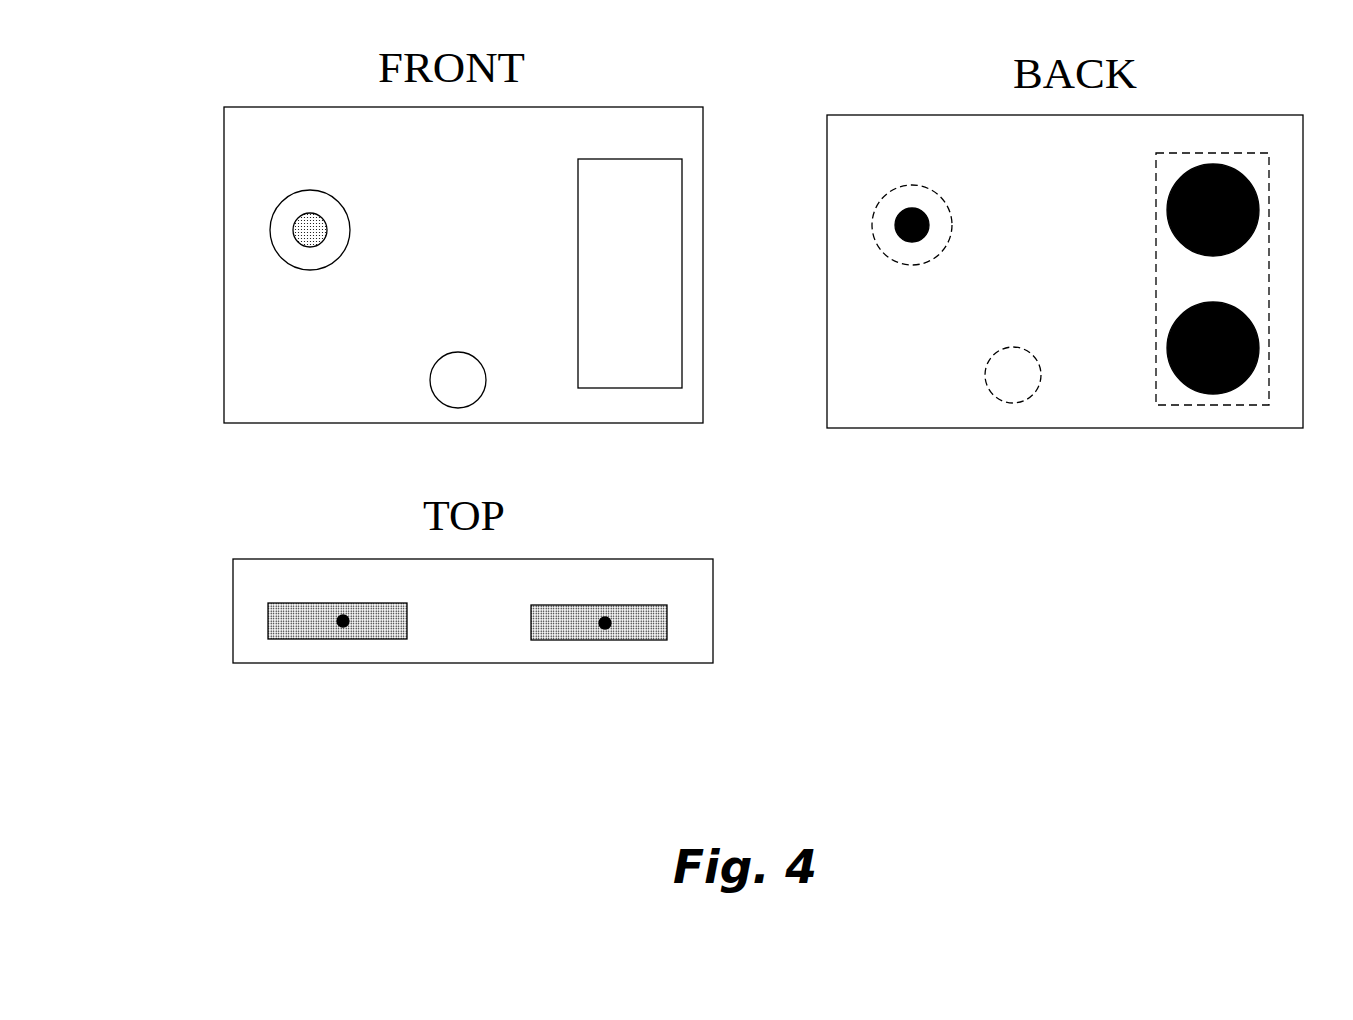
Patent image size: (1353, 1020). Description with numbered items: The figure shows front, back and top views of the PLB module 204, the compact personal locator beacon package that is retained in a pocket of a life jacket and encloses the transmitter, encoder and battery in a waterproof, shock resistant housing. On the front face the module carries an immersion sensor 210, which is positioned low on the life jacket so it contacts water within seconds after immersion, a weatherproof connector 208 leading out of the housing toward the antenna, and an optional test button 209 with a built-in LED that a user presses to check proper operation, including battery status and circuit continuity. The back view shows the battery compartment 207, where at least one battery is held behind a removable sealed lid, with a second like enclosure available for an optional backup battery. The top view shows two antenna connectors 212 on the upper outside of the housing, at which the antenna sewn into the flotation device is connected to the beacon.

The PLB module 204 is at (769, 70).
The battery compartment 207 is at (1167, 220).
The weatherproof connectors 208 is at (578, 249).
The test button 209 is at (430, 384).
The immersion sensor 210 is at (350, 212).
The antenna connector 212 is at (531, 605).